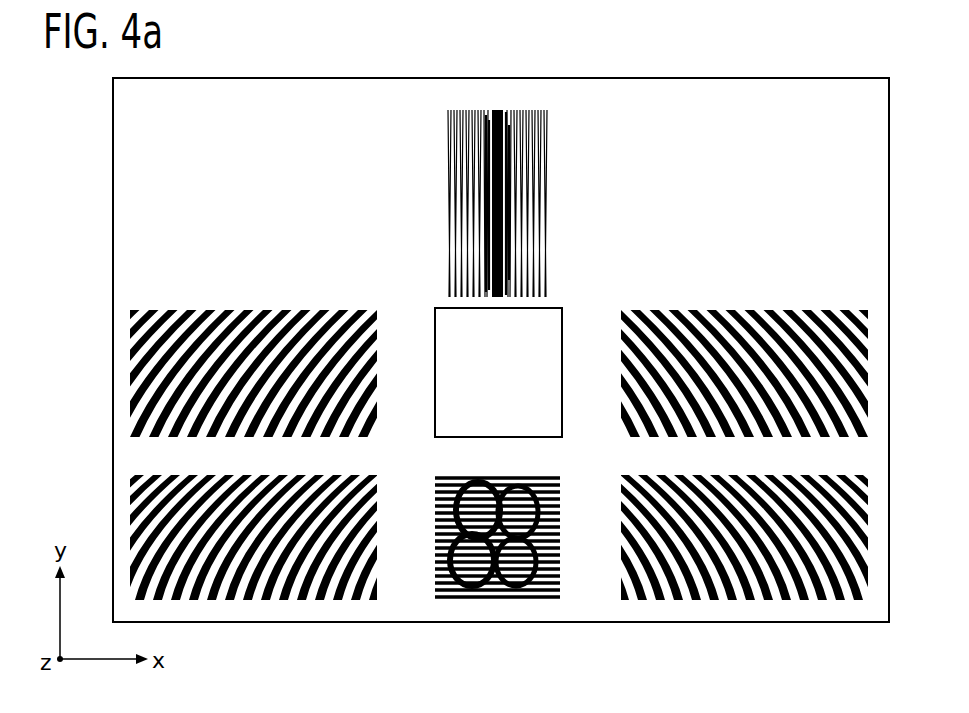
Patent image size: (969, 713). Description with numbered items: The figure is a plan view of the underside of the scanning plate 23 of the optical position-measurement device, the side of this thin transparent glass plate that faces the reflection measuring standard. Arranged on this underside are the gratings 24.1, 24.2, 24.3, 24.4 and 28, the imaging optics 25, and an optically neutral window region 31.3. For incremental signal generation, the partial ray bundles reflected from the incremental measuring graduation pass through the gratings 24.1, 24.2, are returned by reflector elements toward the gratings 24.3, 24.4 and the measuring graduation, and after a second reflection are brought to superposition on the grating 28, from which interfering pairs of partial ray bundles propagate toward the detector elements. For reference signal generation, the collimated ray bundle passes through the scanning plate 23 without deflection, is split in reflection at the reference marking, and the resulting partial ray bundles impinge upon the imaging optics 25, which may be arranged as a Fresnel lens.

The scanning plate 23 is at (802, 97).
The grating 24.1 is at (257, 328).
The grating 24.2 is at (747, 328).
The grating 24.3 is at (767, 580).
The grating 24.4 is at (248, 580).
The imaging optics 25 is at (548, 182).
The grating 28 is at (490, 580).
The optically neutral window region 31.3 is at (457, 330).